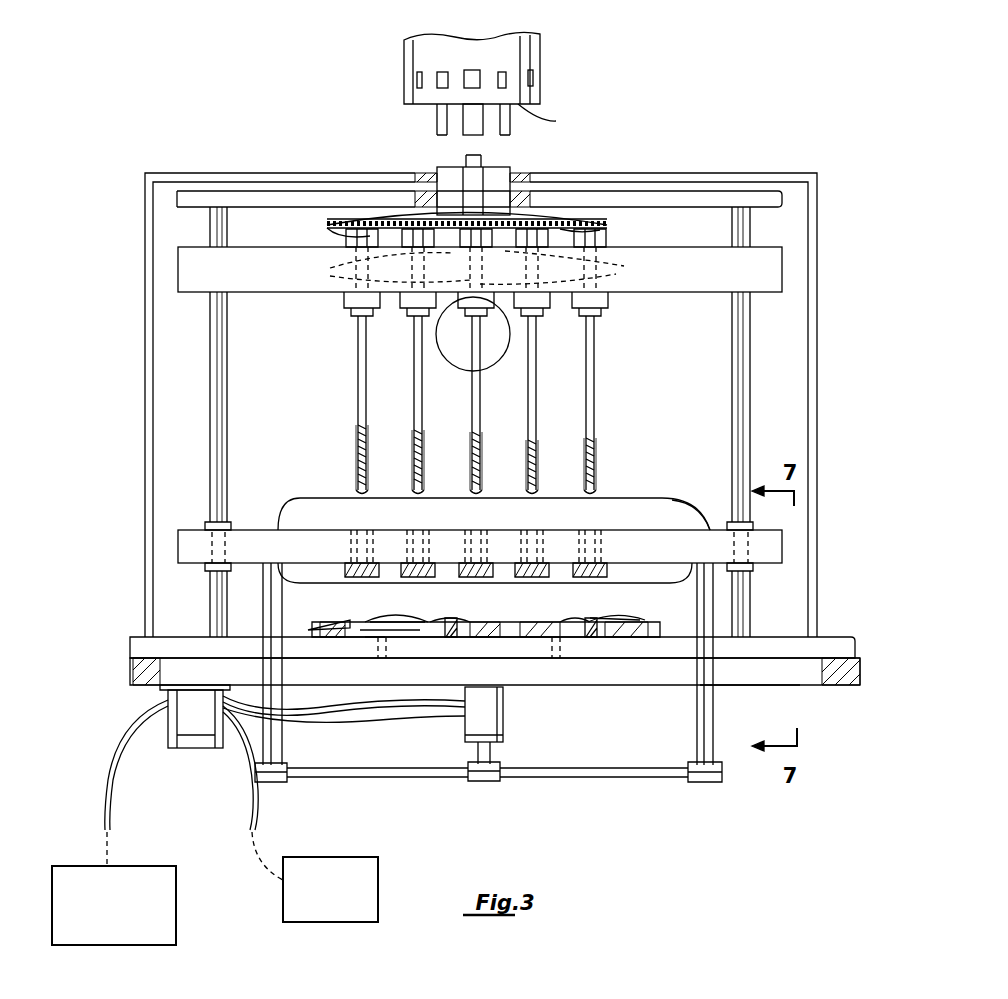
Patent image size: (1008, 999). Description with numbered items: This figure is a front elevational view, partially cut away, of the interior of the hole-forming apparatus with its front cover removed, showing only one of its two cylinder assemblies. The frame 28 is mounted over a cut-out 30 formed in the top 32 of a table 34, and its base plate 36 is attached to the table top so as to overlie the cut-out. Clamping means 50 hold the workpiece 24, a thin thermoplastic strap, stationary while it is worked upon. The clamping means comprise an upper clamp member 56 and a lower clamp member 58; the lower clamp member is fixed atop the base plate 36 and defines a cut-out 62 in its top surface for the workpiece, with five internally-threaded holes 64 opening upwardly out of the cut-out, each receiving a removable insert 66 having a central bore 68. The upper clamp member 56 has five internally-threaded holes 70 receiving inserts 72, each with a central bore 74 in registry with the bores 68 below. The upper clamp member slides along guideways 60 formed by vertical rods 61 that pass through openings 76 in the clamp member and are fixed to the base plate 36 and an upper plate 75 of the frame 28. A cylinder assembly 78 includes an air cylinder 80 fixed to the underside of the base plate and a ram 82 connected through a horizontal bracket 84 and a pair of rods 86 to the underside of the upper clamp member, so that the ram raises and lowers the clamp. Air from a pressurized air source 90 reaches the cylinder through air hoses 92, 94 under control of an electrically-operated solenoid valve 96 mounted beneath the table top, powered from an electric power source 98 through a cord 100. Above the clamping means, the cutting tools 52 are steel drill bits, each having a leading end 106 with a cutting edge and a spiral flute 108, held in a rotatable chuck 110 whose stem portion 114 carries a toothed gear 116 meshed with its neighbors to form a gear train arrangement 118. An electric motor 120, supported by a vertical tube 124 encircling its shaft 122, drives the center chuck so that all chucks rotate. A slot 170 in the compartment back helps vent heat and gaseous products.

The workpiece 24 is at (346, 622).
The frame 28 is at (760, 419).
The cut-out 30 is at (823, 670).
The top 32 is at (858, 661).
The table 34 is at (732, 684).
The base plate 36 is at (206, 637).
The clamping means 50 is at (658, 496).
The cutting tools 52 is at (416, 395).
The upper clamp member 56 is at (292, 520).
The lower clamp member 58 is at (318, 625).
The guideways 60 is at (218, 450).
The rods 61 is at (212, 408).
The cut-out 62 is at (697, 597).
The internally-threaded holes 64 is at (373, 640).
The removable insert 66 is at (450, 619).
The central bore 68 is at (399, 619).
The internally-threaded holes 70 is at (373, 531).
The inserts 72 is at (494, 352).
The central bore 74 is at (510, 622).
The upper plate 75 is at (679, 198).
The openings 76 is at (206, 523).
The cylinder assembly 78 is at (503, 710).
The air cylinder 80 is at (499, 726).
The ram 82 is at (490, 753).
The bracket 84 is at (388, 778).
The rods 86 is at (283, 748).
The pressurized air source 90 is at (318, 858).
The air hose 92 is at (375, 717).
The air hose 94 is at (250, 800).
The solenoid valve 96 is at (180, 721).
The electric power source 98 is at (136, 866).
The cord 100 is at (109, 809).
The leading end 106 is at (357, 493).
The flute 108 is at (414, 442).
The rotatable chuck 110 is at (412, 317).
The stem portion 114 is at (338, 263).
The toothed gear 116 is at (330, 221).
The gear train arrangement 118 is at (613, 231).
The electric motor 120 is at (540, 63).
The shaft 122 is at (466, 160).
The tube 124 is at (511, 169).
The slot 170 is at (688, 505).